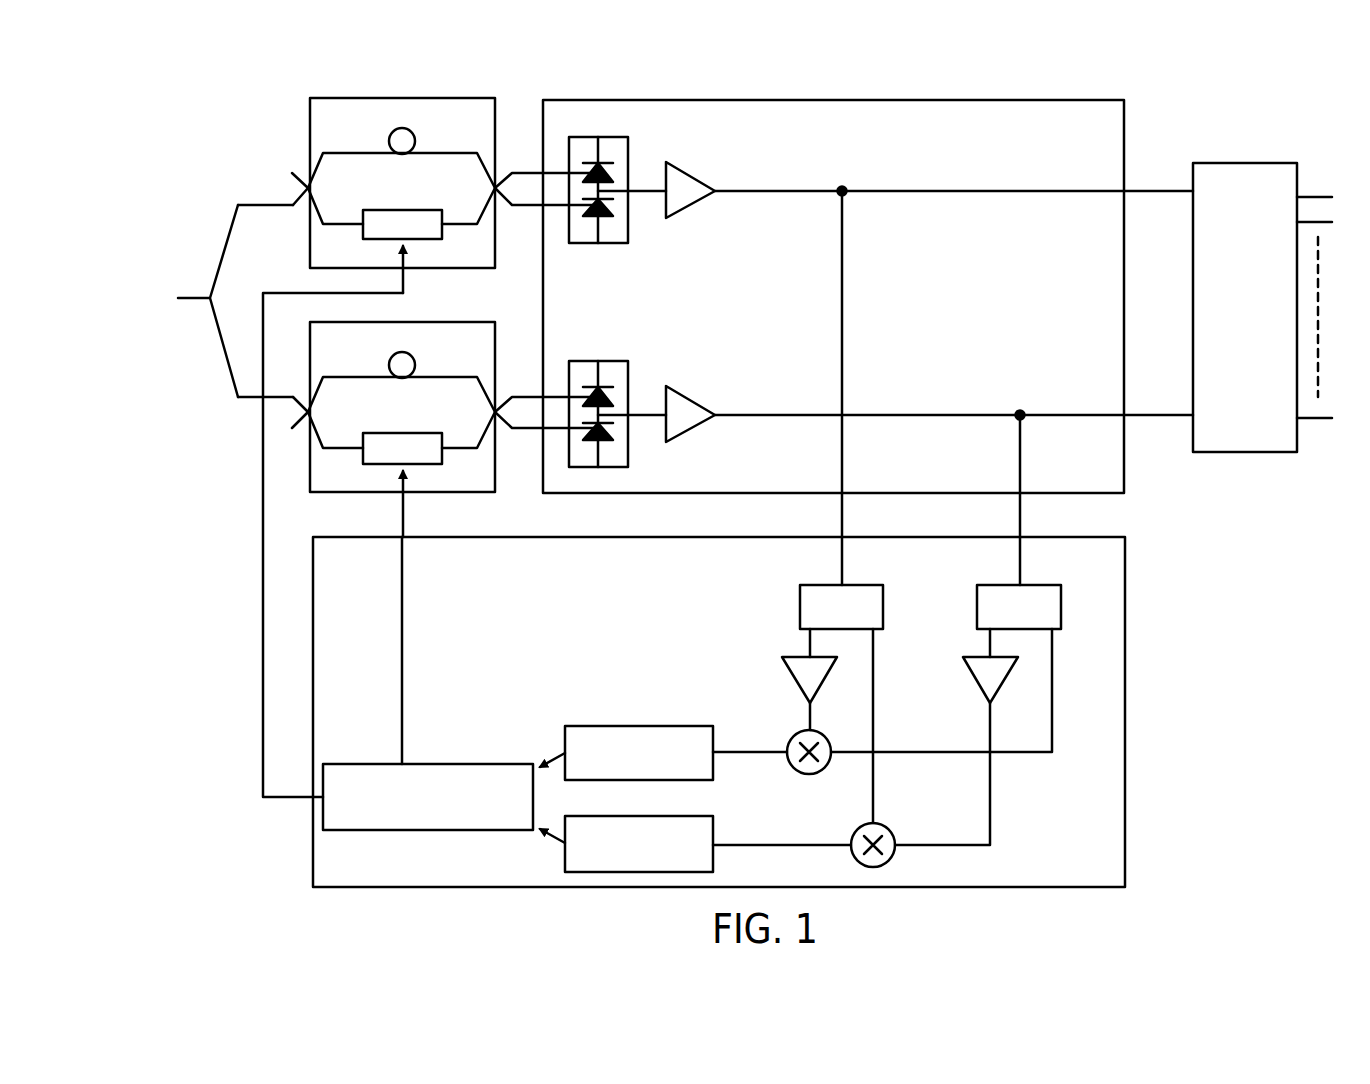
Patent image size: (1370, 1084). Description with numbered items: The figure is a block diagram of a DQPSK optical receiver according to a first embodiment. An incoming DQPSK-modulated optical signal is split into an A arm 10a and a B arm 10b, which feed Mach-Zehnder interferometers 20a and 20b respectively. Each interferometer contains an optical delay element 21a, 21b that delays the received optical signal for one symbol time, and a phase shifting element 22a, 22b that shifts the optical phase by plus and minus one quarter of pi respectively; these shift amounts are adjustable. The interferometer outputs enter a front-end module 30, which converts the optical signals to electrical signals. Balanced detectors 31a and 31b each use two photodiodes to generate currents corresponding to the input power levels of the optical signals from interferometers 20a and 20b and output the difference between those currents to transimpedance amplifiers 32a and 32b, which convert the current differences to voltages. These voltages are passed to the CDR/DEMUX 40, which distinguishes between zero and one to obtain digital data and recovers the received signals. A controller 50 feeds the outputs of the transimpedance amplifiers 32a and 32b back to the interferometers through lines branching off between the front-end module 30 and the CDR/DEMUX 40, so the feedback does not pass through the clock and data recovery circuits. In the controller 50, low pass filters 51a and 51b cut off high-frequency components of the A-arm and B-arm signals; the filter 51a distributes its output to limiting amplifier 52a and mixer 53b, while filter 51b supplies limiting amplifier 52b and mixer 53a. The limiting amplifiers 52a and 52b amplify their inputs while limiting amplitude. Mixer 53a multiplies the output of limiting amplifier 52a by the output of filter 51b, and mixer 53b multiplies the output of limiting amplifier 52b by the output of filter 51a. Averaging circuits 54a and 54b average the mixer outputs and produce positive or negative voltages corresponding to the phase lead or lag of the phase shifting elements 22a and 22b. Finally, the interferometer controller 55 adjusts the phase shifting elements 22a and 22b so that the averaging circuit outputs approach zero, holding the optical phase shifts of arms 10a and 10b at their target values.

The A arm 10a is at (244, 180).
The B arm 10b is at (244, 421).
The Mach-Zehnder interferometer 20a is at (445, 180).
The Mach-Zehnder interferometer 20b is at (445, 429).
The optical delay element 21a is at (408, 132).
The optical delay element 21b is at (408, 356).
The phase shifting element 22a is at (375, 210).
The phase shifting element 22b is at (375, 433).
The front-end module 30 is at (868, 279).
The balanced detector 31a is at (578, 137).
The balanced detector 31b is at (578, 361).
The transimpedance amplifier 32a is at (688, 162).
The transimpedance amplifier 32b is at (688, 386).
The CDR/DEMUX 40 is at (1203, 163).
The controller 50 is at (719, 539).
The low pass filter 51a is at (860, 585).
The low pass filter 51b is at (1037, 585).
The limiting amplifier 52a is at (782, 662).
The limiting amplifier 52b is at (963, 662).
The mixer 53a is at (795, 734).
The mixer 53b is at (858, 827).
The averaging circuit 54a is at (593, 726).
The averaging circuit 54b is at (593, 816).
The interferometer controller 55 is at (470, 764).